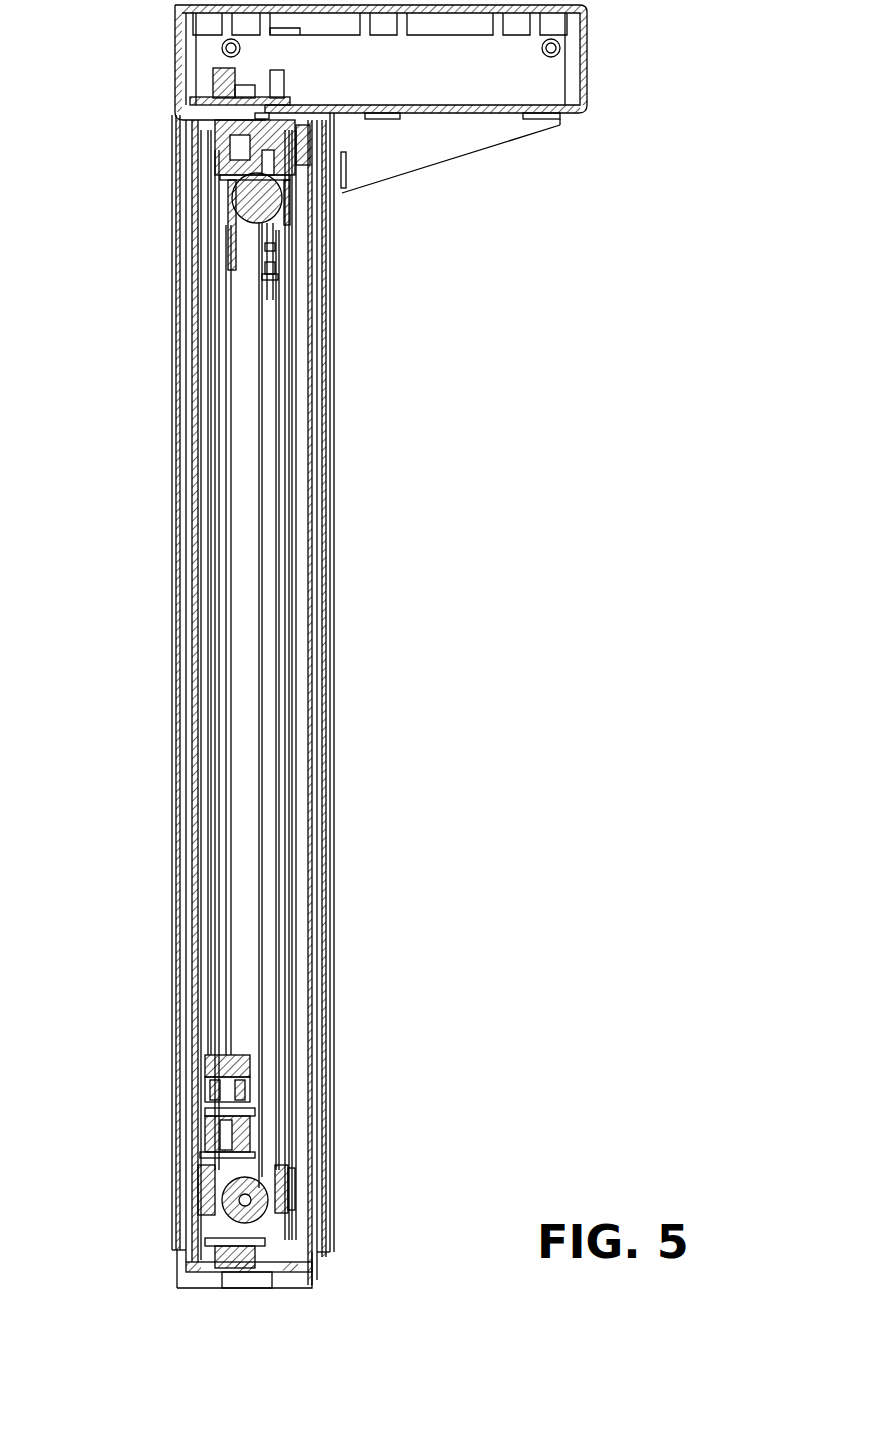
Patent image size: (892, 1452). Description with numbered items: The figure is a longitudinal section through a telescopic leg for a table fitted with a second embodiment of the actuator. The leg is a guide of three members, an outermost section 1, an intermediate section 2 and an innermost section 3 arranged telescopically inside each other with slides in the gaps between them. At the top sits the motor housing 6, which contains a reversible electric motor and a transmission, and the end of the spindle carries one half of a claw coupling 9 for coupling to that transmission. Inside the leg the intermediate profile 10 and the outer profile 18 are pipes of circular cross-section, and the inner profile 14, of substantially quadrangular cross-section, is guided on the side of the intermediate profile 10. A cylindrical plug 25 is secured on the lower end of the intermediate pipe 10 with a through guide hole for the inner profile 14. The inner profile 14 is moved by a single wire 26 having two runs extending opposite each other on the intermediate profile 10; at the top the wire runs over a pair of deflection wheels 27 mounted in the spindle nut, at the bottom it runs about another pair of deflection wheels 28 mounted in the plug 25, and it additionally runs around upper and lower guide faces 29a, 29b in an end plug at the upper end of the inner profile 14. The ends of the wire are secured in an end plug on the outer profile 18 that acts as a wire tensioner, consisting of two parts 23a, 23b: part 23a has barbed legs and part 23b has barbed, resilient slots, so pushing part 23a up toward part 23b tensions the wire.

The outermost section 1 is at (330, 507).
The intermediate section 2 is at (330, 432).
The innermost section 3 is at (330, 352).
The motor housing 6 is at (543, 82).
The claw coupling 9 is at (213, 82).
The intermediate profile 10 is at (240, 457).
The inner profile 14 is at (260, 998).
The outer profile 18 is at (287, 643).
The end plug part 23a is at (210, 1145).
The end plug part 23b is at (210, 1067).
The cylindrical plug 25 is at (280, 1187).
The wire 26 is at (278, 357).
The deflection wheels 27 is at (247, 202).
The deflection wheels 28 is at (252, 1212).
The upper guide face 29a is at (278, 252).
The lower guide face 29b is at (278, 270).